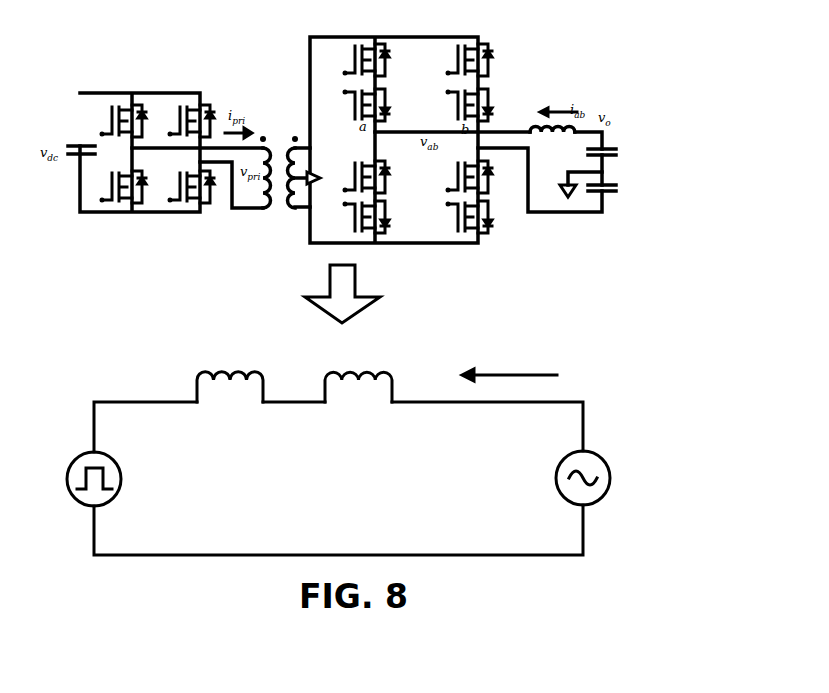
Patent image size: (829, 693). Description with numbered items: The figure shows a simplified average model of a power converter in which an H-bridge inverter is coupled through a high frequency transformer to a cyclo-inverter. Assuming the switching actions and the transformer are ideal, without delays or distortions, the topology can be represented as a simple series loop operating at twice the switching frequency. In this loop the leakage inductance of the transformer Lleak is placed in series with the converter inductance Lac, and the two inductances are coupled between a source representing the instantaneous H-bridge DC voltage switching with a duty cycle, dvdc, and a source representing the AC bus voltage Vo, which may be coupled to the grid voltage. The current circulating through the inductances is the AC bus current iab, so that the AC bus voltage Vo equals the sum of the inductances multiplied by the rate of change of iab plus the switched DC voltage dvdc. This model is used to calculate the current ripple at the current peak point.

The leakage inductance of the transformer Lleak is at (230, 372).
The converter inductance Lac is at (358, 372).
The AC bus current iab is at (509, 361).
The instantaneous H-bridge inverter DC voltage switching with duty cycle d dvdc is at (65, 479).
The AC bus voltage Vo is at (601, 478).